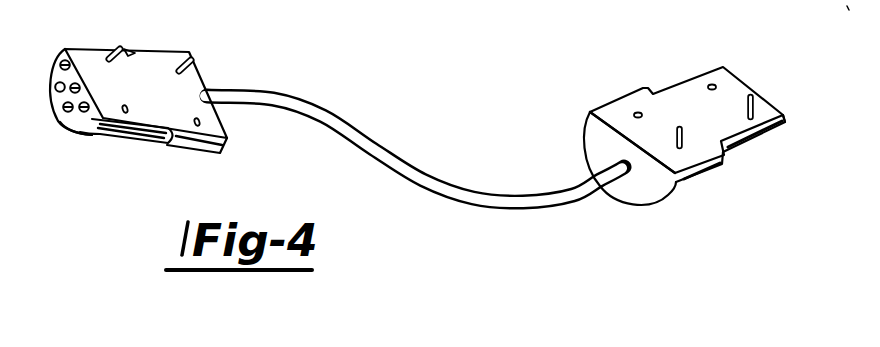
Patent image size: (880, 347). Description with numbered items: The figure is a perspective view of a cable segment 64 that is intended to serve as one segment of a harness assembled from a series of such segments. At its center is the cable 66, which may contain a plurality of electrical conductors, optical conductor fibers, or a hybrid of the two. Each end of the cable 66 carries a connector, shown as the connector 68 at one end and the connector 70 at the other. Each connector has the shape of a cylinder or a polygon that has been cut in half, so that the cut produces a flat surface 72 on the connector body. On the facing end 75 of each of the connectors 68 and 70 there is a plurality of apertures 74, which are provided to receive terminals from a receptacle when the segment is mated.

The cable segment 64 is at (553, 86).
The cable 66 is at (407, 157).
The connector 68 is at (115, 135).
The connector 70 is at (749, 81).
The flat surface 72 is at (151, 68).
The apertures 74 is at (66, 130).
The facing end 75 is at (51, 62).